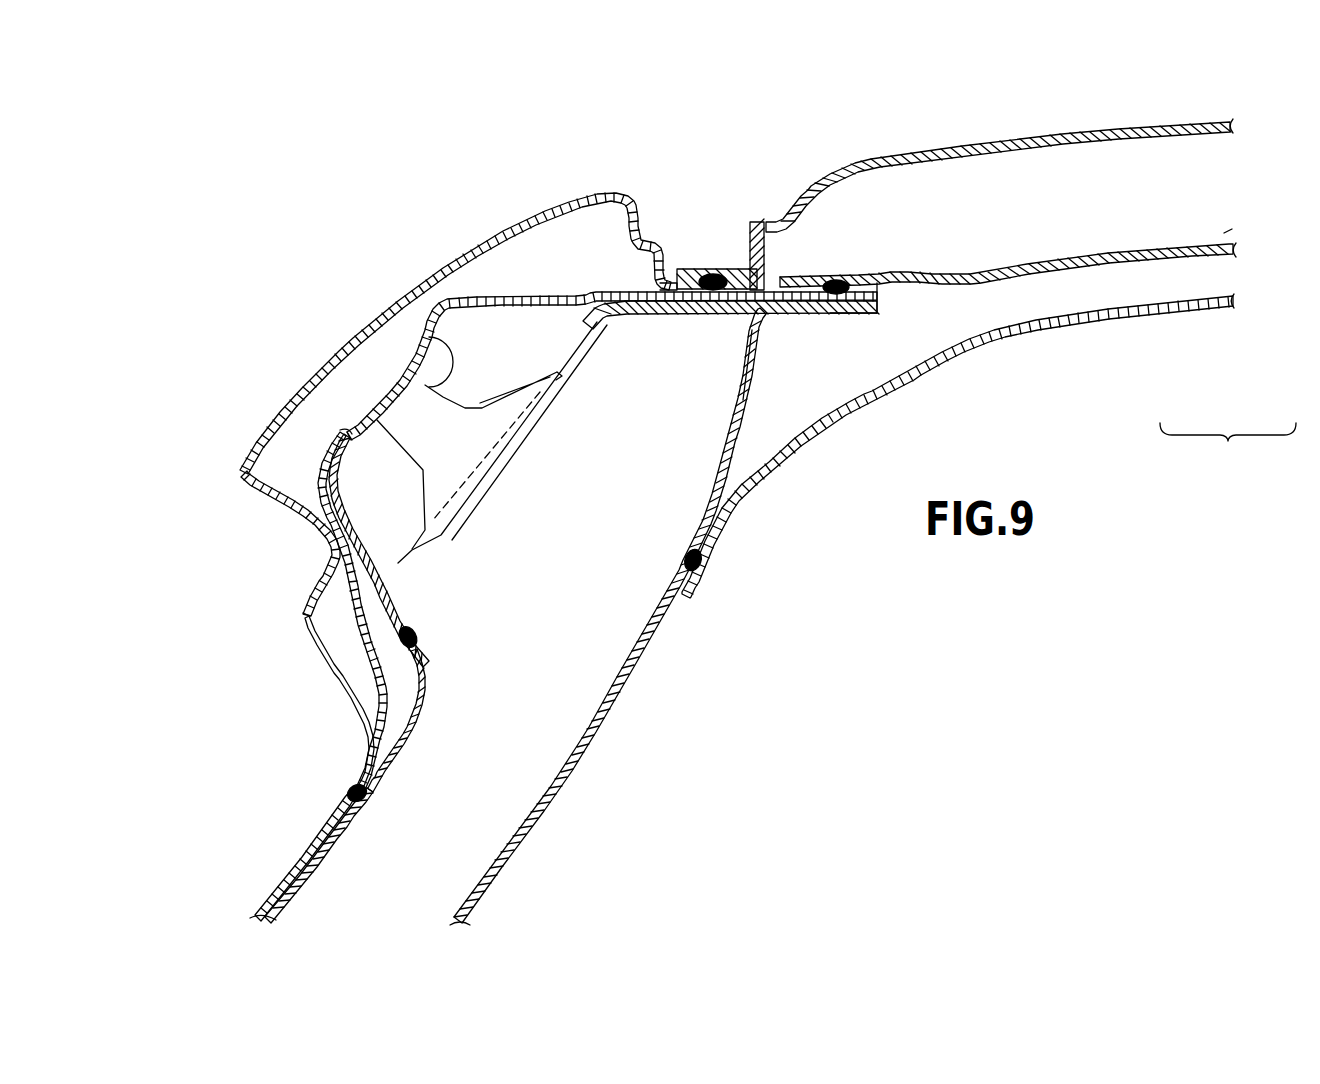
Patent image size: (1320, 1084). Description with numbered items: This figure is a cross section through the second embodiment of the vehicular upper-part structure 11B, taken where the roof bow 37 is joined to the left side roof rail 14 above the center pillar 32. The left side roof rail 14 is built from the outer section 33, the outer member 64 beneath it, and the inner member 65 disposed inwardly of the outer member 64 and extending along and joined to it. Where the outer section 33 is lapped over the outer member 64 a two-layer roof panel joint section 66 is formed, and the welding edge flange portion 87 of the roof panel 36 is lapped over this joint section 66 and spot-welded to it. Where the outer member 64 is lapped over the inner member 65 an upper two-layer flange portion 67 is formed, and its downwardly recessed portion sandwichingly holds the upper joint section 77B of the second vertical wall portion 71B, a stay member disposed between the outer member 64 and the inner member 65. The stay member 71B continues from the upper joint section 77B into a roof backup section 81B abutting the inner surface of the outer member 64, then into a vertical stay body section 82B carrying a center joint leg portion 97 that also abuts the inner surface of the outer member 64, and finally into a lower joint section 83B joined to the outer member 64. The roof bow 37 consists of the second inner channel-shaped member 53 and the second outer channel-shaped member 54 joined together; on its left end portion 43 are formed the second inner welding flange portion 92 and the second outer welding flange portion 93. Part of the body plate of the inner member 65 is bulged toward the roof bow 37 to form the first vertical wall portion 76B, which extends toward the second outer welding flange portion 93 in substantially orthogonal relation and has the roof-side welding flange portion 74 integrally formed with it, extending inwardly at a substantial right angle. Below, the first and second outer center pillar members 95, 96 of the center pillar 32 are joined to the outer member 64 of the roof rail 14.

The vehicular upper-part structure 11B is at (561, 165).
The left side roof rail 14 is at (329, 263).
The center pillar 32 is at (247, 834).
The outer section 33 is at (303, 378).
The roof panel 36 is at (1005, 128).
The roof bow 37 is at (1228, 445).
The left end portion 43 is at (905, 278).
The second inner channel-shaped member 53 is at (1133, 320).
The second outer channel-shaped member 54 is at (1222, 232).
The outer member 64 is at (520, 298).
The inner member 65 is at (624, 649).
The two-layer roof panel joint section 66 is at (673, 270).
The upper two-layer flange portion 67 is at (778, 223).
The second vertical wall portion 71B is at (492, 369).
The roof-side welding flange portion 74 is at (853, 316).
The first vertical wall portion 76B is at (738, 405).
The upper joint section 77B is at (880, 300).
The roof backup section 81B is at (692, 316).
The vertical stay body section 82B is at (533, 405).
The lower joint section 83B is at (425, 648).
The welding edge flange portion 87 is at (700, 275).
The second inner welding flange portion 92 is at (714, 545).
The second outer welding flange portion 93 is at (829, 280).
The first outer center pillar member 95 is at (327, 853).
The second outer center pillar member 96 is at (307, 837).
The center joint leg portion 97 is at (427, 353).